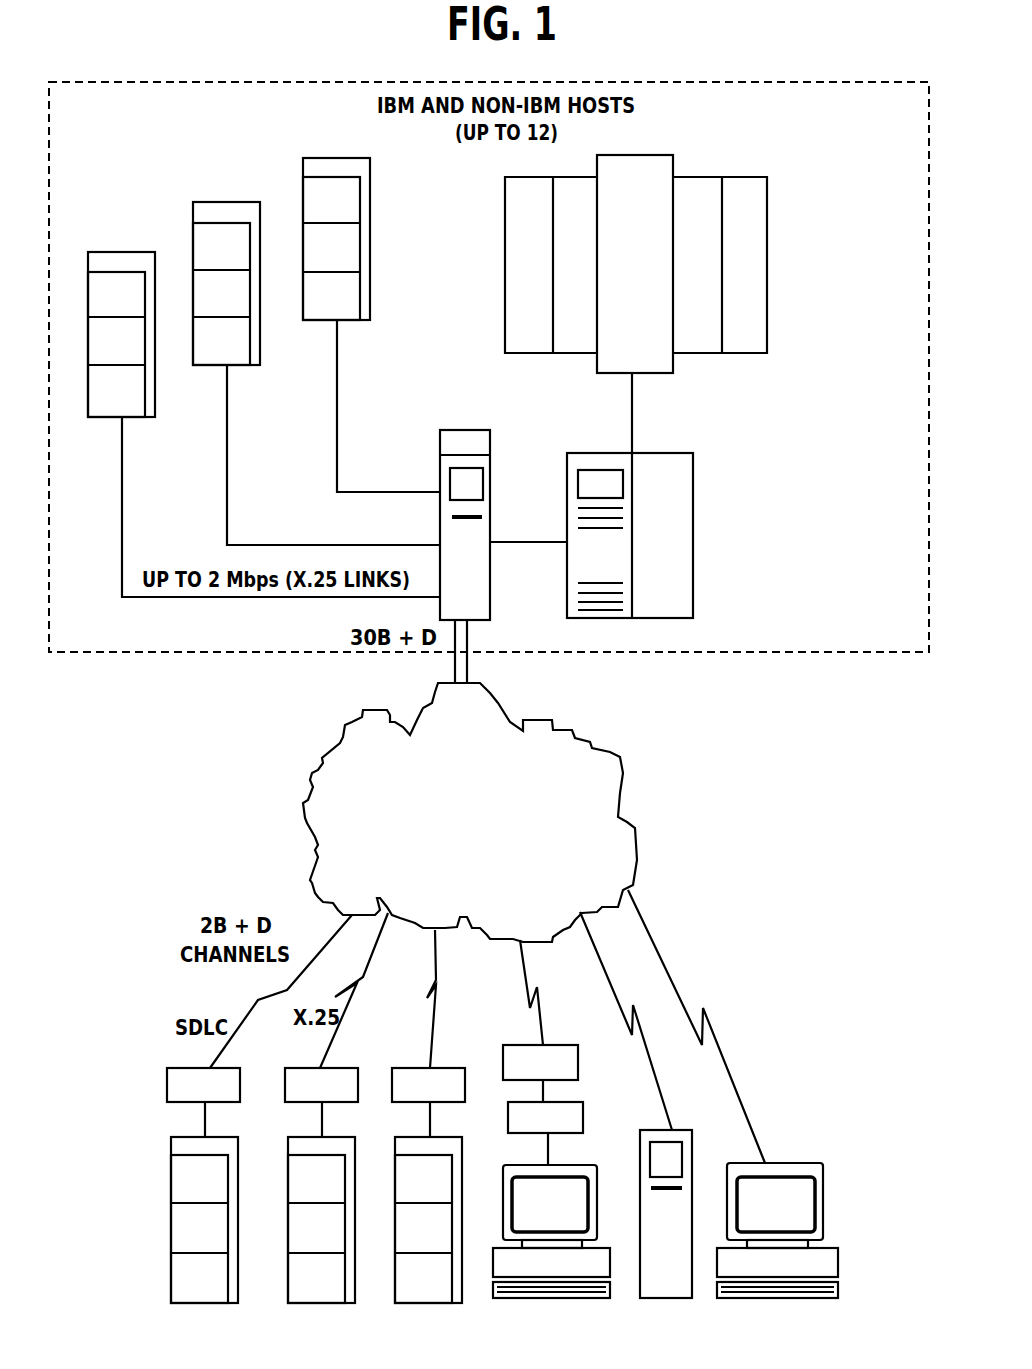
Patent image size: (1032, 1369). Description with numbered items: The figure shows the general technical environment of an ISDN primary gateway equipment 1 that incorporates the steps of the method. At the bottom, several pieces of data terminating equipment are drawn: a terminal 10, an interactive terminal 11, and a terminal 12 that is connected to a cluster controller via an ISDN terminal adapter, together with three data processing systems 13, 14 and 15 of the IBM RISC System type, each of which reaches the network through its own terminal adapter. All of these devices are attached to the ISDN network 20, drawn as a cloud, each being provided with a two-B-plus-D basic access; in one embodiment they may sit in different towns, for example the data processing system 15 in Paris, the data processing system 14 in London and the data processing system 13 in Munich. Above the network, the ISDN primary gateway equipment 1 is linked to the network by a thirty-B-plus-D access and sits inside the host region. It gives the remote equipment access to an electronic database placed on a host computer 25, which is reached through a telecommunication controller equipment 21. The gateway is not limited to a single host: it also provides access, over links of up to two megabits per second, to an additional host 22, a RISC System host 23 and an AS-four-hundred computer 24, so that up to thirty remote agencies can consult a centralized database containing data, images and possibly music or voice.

The ISDN primary gateway equipment 1 is at (492, 438).
The terminal 10 is at (790, 1160).
The interactive terminal 11 is at (693, 1130).
The terminal 12 is at (590, 1160).
The data processing system 13 is at (462, 1157).
The data processing system 14 is at (355, 1157).
The data processing system 15 is at (238, 1157).
The ISDN network 20 is at (595, 743).
The telecommunication controller equipment 21 is at (693, 493).
The ES/9221 host 22 is at (370, 308).
The RISC System/6000 host 23 is at (260, 352).
The AS/400 computer 24 is at (155, 400).
The host computer 25 is at (737, 173).